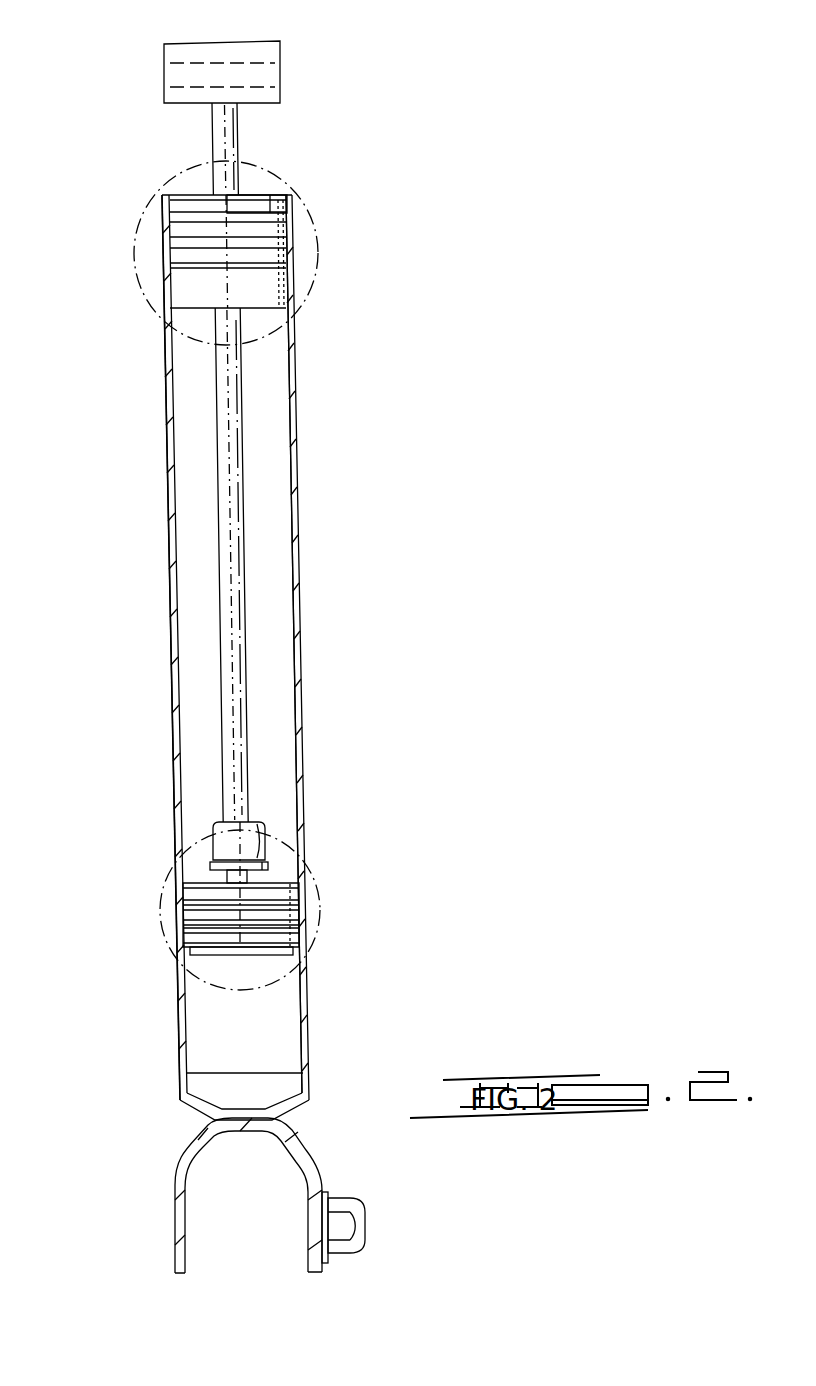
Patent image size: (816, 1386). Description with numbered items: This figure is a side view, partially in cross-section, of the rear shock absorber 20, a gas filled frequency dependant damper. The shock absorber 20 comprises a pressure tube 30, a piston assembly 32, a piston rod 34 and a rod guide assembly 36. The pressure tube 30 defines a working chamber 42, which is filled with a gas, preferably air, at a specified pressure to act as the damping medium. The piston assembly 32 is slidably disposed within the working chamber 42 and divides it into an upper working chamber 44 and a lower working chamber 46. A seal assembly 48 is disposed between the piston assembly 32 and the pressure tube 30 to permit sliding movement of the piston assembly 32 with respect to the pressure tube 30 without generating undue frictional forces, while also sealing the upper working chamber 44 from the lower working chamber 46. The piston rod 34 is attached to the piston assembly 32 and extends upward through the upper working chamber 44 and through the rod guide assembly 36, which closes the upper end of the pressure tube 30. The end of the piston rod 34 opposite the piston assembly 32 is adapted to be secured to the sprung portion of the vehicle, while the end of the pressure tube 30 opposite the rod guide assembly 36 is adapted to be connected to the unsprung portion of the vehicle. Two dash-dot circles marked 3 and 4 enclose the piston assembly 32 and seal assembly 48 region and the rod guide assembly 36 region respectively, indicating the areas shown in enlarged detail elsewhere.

The rear shock absorber 20 is at (521, 98).
The pressure tube 30 is at (297, 503).
The piston assembly 32 is at (300, 915).
The piston rod 34 is at (237, 612).
The rod guide assembly 36 is at (293, 267).
The working chamber 42 is at (265, 723).
The upper working chamber 44 is at (193, 523).
The lower working chamber 46 is at (222, 1038).
The seal assembly 48 is at (163, 936).
The detail region of FIG. 3 is at (150, 897).
The detail region of FIG. 4 is at (128, 270).